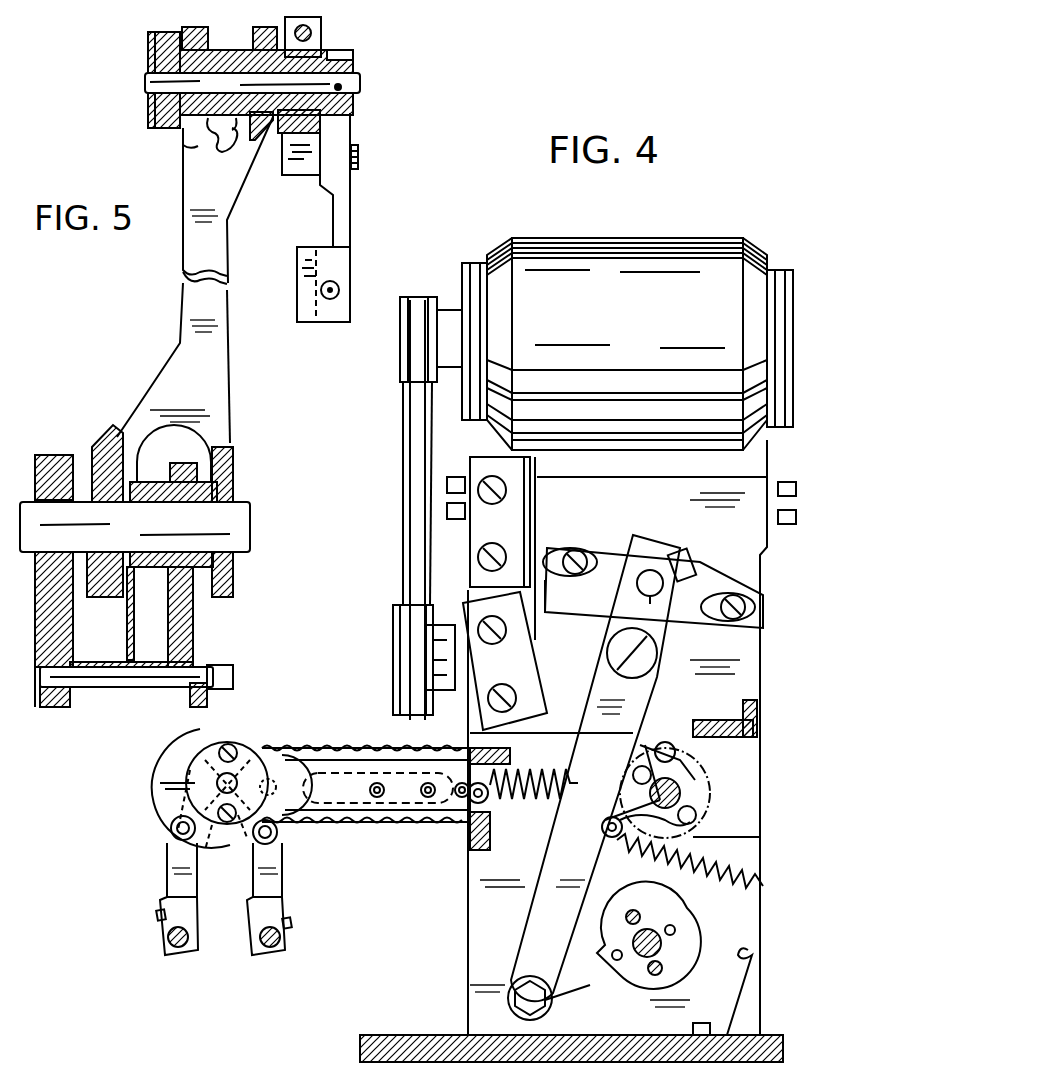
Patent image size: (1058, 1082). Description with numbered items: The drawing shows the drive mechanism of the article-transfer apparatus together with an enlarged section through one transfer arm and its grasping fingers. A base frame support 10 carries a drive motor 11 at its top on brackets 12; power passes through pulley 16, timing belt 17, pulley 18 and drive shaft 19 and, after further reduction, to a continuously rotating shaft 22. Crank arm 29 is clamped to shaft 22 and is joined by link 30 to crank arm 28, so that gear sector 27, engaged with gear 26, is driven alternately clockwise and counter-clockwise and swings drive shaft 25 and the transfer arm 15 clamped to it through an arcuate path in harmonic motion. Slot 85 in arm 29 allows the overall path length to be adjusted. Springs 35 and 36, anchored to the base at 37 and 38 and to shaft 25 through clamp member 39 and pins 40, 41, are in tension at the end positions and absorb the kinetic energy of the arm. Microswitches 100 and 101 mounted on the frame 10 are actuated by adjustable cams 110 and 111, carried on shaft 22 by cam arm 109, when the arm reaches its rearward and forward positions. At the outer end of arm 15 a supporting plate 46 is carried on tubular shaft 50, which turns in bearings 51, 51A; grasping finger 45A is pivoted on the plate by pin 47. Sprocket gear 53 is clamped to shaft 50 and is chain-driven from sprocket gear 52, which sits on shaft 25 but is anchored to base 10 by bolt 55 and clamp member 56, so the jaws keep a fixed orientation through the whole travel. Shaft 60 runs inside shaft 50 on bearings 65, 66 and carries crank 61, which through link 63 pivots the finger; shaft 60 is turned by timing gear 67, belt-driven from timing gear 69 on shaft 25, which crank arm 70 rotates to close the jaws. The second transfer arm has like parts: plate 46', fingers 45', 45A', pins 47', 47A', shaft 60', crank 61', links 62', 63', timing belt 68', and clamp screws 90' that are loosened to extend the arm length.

In FIG. 5, the base frame support 10 is at (52, 458).
In FIG. 4, the base frame support 10 is at (420, 1035).
In FIG. 4, the drive motor 11 is at (573, 255).
In FIG. 4, the brackets 12 is at (478, 395).
In FIG. 5, the transfer arm 15 is at (172, 377).
In FIG. 4, the pulley 16 is at (402, 380).
In FIG. 4, the timing belt 17 is at (410, 440).
In FIG. 4, the pulley 18 is at (395, 637).
In FIG. 4, the drive shaft 19 is at (452, 650).
In FIG. 4, the shaft 22 is at (658, 574).
In FIG. 5, the drive shaft 25 is at (250, 530).
In FIG. 4, the drive shaft 25 is at (700, 798).
In FIG. 4, the gear 26 is at (688, 832).
In FIG. 4, the gear sector 27 is at (680, 866).
In FIG. 4, the crank arm 28 is at (573, 985).
In FIG. 4, the crank arm 29 is at (623, 610).
In FIG. 4, the link 30 is at (612, 712).
In FIG. 4, the spring 35 is at (700, 896).
In FIG. 4, the spring 36 is at (534, 792).
In FIG. 4, the spring anchor 37 is at (738, 996).
In FIG. 4, the spring anchor 38 is at (492, 799).
In FIG. 4, the clamp member 39 is at (692, 760).
In FIG. 4, the pin 40 is at (596, 820).
In FIG. 4, the pin 41 is at (683, 745).
In FIG. 5, the arm 45' is at (288, 899).
In FIG. 5, the grasping finger 45A is at (355, 217).
In FIG. 5, the arm 45A' is at (148, 899).
In FIG. 5, the supporting plate 46 is at (300, 174).
In FIG. 5, the supporting plate 46' is at (165, 788).
In FIG. 5, the pin 47 is at (373, 159).
In FIG. 5, the pivot 47' is at (291, 838).
In FIG. 5, the pivot 47A' is at (146, 835).
In FIG. 5, the shaft 50 is at (316, 48).
In FIG. 5, the bearing 51 is at (185, 140).
In FIG. 5, the bearing 51A is at (262, 133).
In FIG. 5, the sprocket gear 52 is at (215, 488).
In FIG. 5, the sprocket gear 53 is at (216, 148).
In FIG. 5, the bolt 55 is at (126, 688).
In FIG. 5, the clamp member 56 is at (185, 634).
In FIG. 5, the shaft 60 is at (270, 89).
In FIG. 5, the hub 60' is at (217, 767).
In FIG. 5, the crank 61 is at (288, 65).
In FIG. 5, the sleeve 61' is at (212, 849).
In FIG. 5, the pin 62' is at (213, 813).
In FIG. 5, the link 63 is at (361, 46).
In FIG. 5, the screw 63' is at (184, 779).
In FIG. 5, the bearing 65 is at (322, 126).
In FIG. 5, the bearing 66 is at (166, 128).
In FIG. 5, the timing gear 67 is at (150, 98).
In FIG. 5, the timing belt 68' is at (366, 768).
In FIG. 5, the timing gear 69 is at (160, 478).
In FIG. 5, the crank arm 70 is at (127, 640).
In FIG. 4, the slot 85 is at (625, 645).
In FIG. 5, the clamp screws 90' is at (414, 819).
In FIG. 4, the microswitch 100 is at (518, 508).
In FIG. 4, the microswitch 101 is at (532, 705).
In FIG. 4, the cam arm 109 is at (610, 548).
In FIG. 4, the cam 110 is at (550, 556).
In FIG. 4, the cam 111 is at (740, 622).